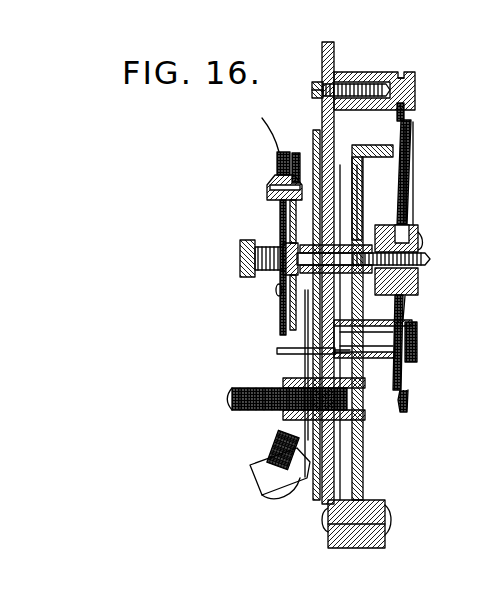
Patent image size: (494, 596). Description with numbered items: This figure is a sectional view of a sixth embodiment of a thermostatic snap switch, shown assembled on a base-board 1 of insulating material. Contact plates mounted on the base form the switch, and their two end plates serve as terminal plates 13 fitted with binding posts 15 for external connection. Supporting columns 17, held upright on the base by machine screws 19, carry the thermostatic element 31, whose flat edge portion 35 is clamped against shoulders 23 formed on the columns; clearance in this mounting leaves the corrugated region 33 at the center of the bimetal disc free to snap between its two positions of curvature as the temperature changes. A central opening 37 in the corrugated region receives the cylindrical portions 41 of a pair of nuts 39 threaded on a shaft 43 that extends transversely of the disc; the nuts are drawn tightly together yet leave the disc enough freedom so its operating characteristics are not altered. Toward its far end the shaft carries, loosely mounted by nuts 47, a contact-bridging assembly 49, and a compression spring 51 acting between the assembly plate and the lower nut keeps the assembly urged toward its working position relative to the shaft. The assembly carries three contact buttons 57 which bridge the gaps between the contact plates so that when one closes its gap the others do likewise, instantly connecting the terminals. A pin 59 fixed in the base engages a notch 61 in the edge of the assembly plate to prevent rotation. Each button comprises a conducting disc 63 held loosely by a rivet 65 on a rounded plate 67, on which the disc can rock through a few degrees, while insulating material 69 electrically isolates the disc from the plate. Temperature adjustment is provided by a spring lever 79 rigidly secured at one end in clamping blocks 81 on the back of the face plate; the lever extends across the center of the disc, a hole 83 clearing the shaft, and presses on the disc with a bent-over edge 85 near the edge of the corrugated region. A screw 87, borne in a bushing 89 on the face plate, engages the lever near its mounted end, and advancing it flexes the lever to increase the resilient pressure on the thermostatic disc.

The base-board 1 is at (322, 46).
The terminal plates 13 is at (314, 145).
The binding posts 15 is at (255, 486).
The supporting columns 17 is at (357, 72).
The machine screws 19 is at (314, 84).
The shoulders 23 is at (404, 72).
The thermostatic element 31 is at (412, 362).
The corrugated region 33 is at (411, 168).
The flat edge portion 35 is at (405, 113).
The central opening 37 is at (404, 300).
The nuts 39 is at (412, 225).
The cylindrical portions 41 is at (422, 240).
The shaft 43 is at (430, 259).
The nuts 47 is at (272, 246).
The contact-bridging assembly 49 is at (290, 206).
The compression spring 51 is at (274, 292).
The contact buttons 57 is at (273, 176).
The pin 59 is at (278, 351).
The notch 61 is at (302, 360).
The disc 63 is at (296, 153).
The rivet 65 is at (268, 186).
The rounded plate 67 is at (285, 152).
The insulating material 69 is at (270, 140).
The spring lever 79 is at (364, 438).
The clamping blocks 81 is at (377, 549).
The hole 83 is at (357, 240).
The bent-over edge 85 is at (372, 145).
The screw 87 is at (240, 406).
The bushing 89 is at (347, 408).